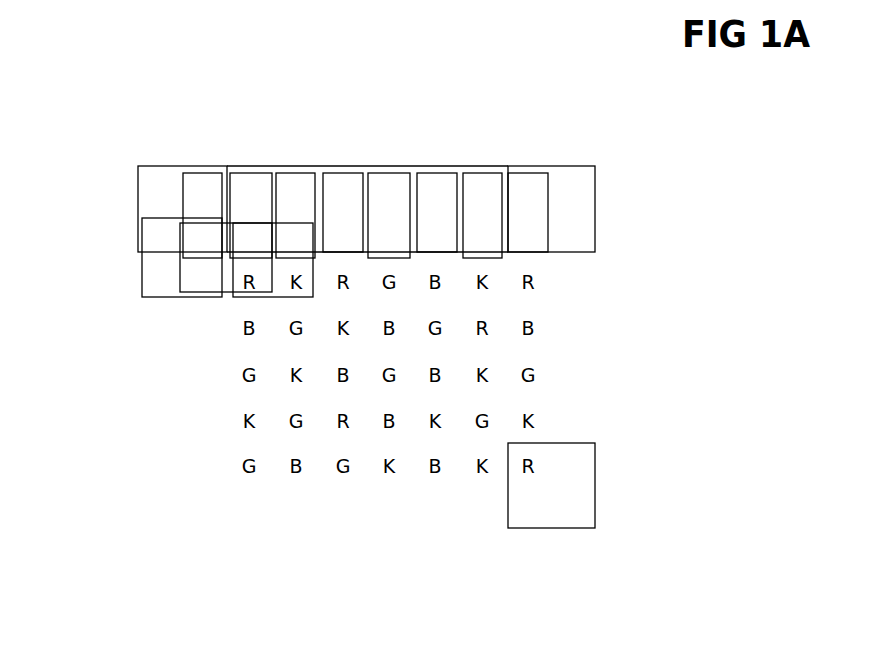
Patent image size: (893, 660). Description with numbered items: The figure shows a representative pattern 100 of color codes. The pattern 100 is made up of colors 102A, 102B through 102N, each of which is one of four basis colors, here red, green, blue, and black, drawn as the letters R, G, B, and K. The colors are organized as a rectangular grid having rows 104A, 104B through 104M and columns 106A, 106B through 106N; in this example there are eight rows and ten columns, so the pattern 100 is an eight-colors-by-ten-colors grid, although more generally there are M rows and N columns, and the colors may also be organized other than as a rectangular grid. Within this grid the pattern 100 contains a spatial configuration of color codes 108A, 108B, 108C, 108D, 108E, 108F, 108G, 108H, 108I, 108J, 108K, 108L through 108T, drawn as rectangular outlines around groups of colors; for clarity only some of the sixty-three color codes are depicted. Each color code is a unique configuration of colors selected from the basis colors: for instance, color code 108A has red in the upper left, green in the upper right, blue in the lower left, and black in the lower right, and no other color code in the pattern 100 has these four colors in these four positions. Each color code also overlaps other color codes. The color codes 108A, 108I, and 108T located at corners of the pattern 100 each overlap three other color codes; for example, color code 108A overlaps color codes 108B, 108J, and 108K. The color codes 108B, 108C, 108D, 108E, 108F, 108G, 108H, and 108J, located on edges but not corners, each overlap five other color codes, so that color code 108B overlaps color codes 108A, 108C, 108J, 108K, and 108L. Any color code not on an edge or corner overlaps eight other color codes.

The pattern 100 is at (778, 107).
The color 102A is at (164, 187).
The color 102B is at (212, 181).
The color 102N is at (583, 510).
The row 104A is at (113, 189).
The row 104B is at (113, 237).
The row 104M is at (113, 514).
The column 106A is at (157, 550).
The column 106B is at (203, 550).
The column 106N is at (575, 550).
The color code 108A is at (138, 166).
The color code 108B is at (229, 173).
The color code 108C is at (288, 166).
The color code 108D is at (320, 173).
The color code 108E is at (383, 166).
The color code 108F is at (415, 173).
The color code 108G is at (473, 166).
The color code 108H is at (505, 173).
The color code 108I is at (573, 166).
The color code 108J is at (142, 266).
The color code 108K is at (223, 293).
The color code 108L is at (313, 280).
The color code 108T is at (595, 458).